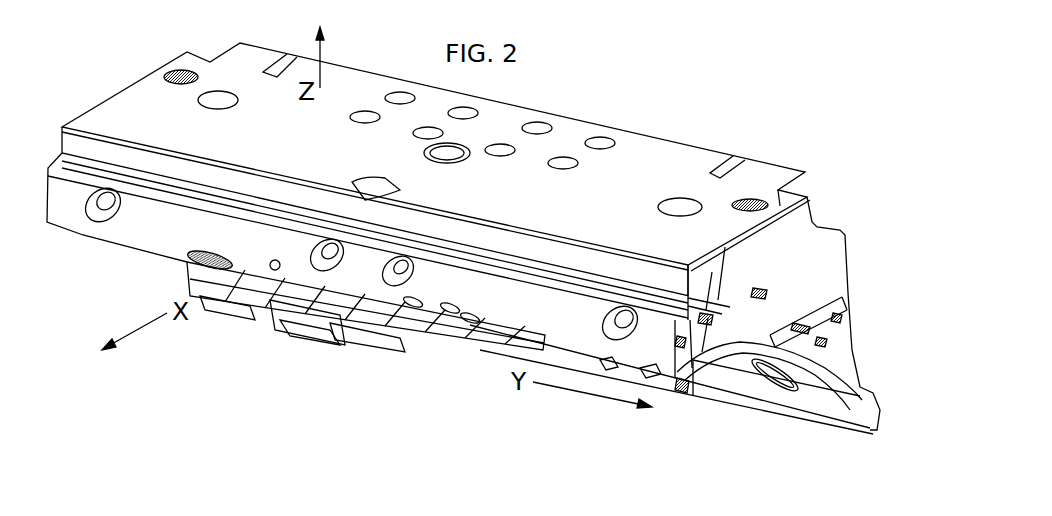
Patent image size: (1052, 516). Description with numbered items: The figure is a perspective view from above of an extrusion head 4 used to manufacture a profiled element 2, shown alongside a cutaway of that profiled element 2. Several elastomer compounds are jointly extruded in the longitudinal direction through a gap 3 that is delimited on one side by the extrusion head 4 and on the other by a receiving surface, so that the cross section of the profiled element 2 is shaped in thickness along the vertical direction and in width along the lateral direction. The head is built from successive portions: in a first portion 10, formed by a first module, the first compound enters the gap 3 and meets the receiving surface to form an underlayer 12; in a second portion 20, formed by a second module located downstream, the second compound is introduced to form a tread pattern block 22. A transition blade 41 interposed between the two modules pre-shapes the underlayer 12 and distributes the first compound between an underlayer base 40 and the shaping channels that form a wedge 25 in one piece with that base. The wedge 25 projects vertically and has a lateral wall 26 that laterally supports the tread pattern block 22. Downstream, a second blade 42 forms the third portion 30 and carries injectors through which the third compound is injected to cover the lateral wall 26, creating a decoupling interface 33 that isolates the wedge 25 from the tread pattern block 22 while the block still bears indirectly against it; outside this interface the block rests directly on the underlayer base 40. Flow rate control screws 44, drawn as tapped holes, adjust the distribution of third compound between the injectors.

The extrusion head 4 is at (602, 109).
The profiled element 2 is at (343, 341).
The gap 3 is at (436, 312).
The decoupling interface 33 is at (312, 290).
The tread pattern block 22 is at (356, 290).
The wedge 25 is at (305, 316).
The underlayer 12 is at (330, 323).
The underlayer base 40 is at (274, 369).
The lateral wall 26 is at (300, 308).
The flow rate control screws 44 is at (384, 280).
The second blade 42 is at (708, 318).
The transition blade 41 is at (770, 340).
The first portion 10 is at (794, 384).
The second portion 20 is at (736, 355).
The third portion 30 is at (677, 380).